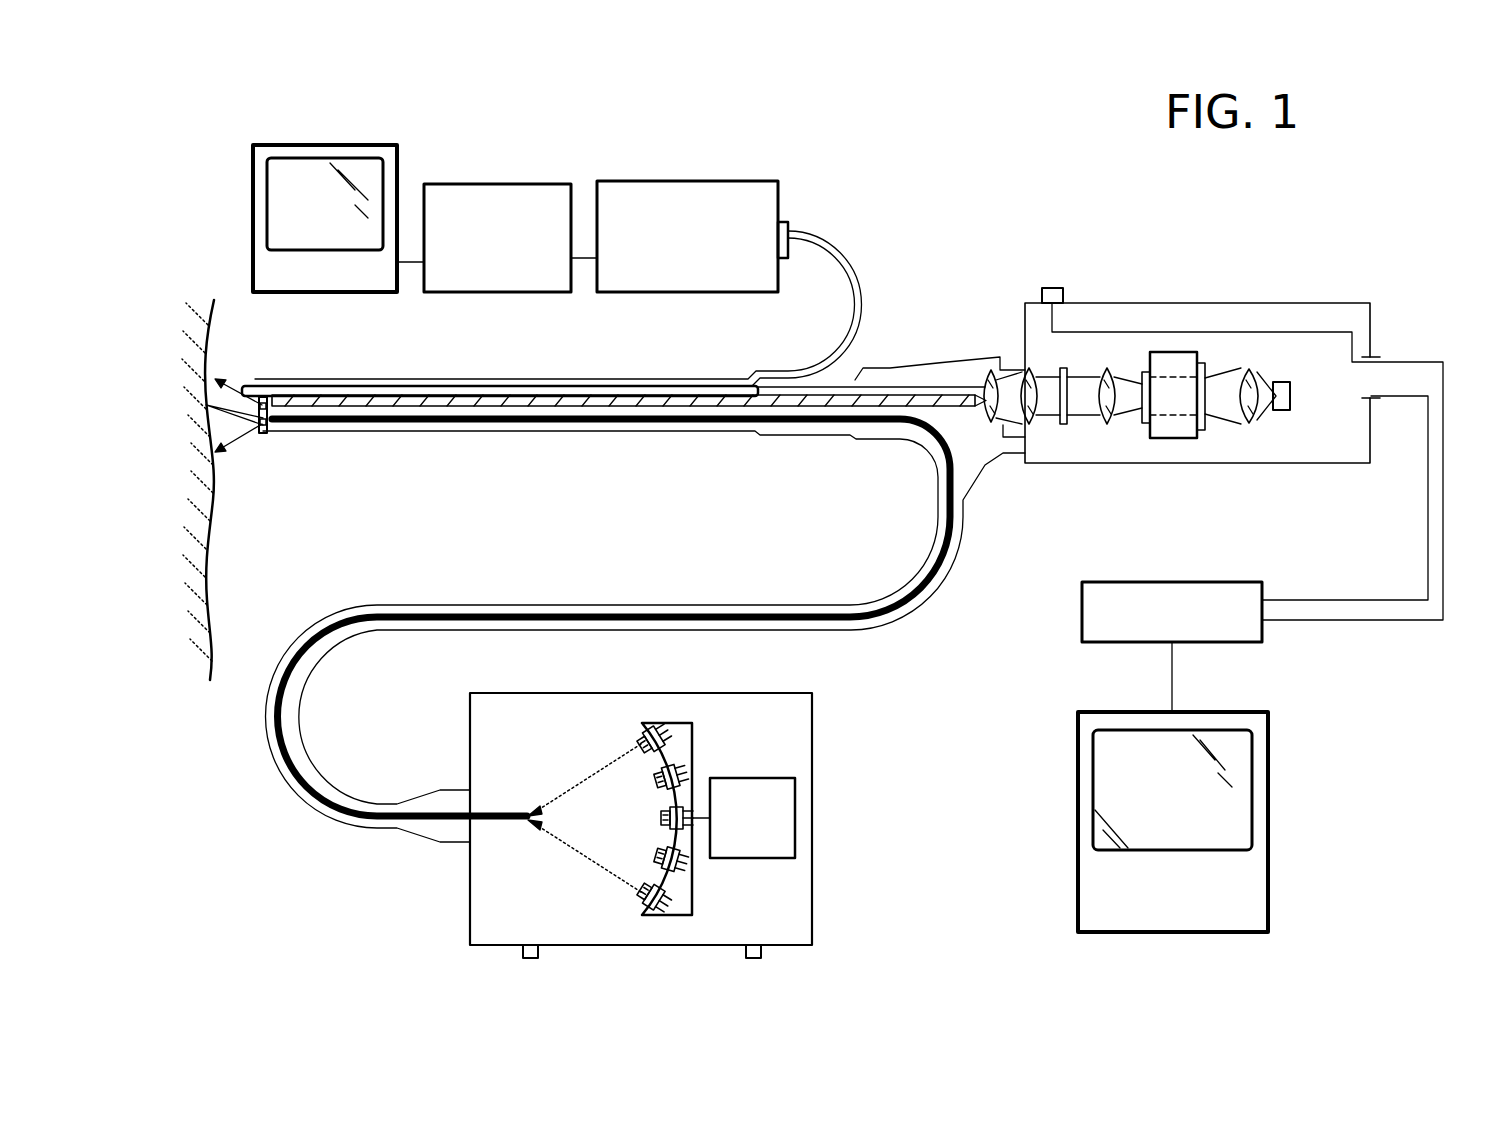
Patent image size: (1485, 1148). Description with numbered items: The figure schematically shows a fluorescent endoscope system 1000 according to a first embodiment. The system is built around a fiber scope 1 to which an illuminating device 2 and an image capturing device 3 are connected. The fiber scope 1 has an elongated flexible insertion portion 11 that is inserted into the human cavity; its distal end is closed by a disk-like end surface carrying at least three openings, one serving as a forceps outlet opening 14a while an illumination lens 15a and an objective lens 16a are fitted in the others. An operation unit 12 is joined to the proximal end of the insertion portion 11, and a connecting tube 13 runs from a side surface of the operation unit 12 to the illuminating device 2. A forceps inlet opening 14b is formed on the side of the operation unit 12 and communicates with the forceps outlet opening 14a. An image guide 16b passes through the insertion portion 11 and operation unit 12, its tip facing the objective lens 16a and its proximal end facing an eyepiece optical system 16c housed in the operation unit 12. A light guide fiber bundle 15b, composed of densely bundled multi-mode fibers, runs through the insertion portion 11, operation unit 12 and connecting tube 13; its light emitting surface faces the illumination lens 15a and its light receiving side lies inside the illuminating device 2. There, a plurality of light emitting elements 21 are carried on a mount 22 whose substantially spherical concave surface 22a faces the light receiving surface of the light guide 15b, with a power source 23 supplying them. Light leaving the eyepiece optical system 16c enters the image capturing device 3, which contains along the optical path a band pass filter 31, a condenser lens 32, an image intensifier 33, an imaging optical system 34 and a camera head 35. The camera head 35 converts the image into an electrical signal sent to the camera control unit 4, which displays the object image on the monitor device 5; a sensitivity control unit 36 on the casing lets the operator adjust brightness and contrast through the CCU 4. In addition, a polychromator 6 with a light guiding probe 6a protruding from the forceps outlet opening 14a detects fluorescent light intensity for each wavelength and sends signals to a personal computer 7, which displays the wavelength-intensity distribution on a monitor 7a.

The fluorescent endoscope system 1000 is at (944, 184).
The fiber scope 1 is at (602, 417).
The illuminating device 2 is at (668, 825).
The image capturing device 3 is at (1213, 430).
The camera control unit 4 is at (1212, 582).
The monitor device 5 is at (1270, 790).
The polychromator 6 is at (656, 181).
The light guiding probe 6a is at (812, 242).
The personal computer 7 is at (519, 184).
The monitor 7a is at (398, 150).
The insertion portion 11 is at (540, 432).
The operation unit 12 is at (956, 358).
The connecting tube 13 is at (682, 606).
The forceps outlet opening 14a is at (247, 385).
The forceps inlet opening 14b is at (822, 370).
The illumination lens 15a is at (266, 428).
The light guide fiber bundle 15b is at (877, 428).
The objective lens 16a is at (262, 428).
The image guide 16b is at (884, 376).
The eyepiece optical system 16c is at (1030, 451).
The light emitting elements 21 is at (642, 738).
The mount 22 is at (700, 755).
The concave surface 22a is at (644, 895).
The power source 23 is at (772, 858).
The band pass filter 31 is at (1066, 430).
The condenser lens 32 is at (1100, 374).
The image intensifier 33 is at (1175, 440).
The imaging optical system 34 is at (1258, 372).
The camera head 35 is at (1291, 400).
The sensitivity control unit 36 is at (1050, 287).